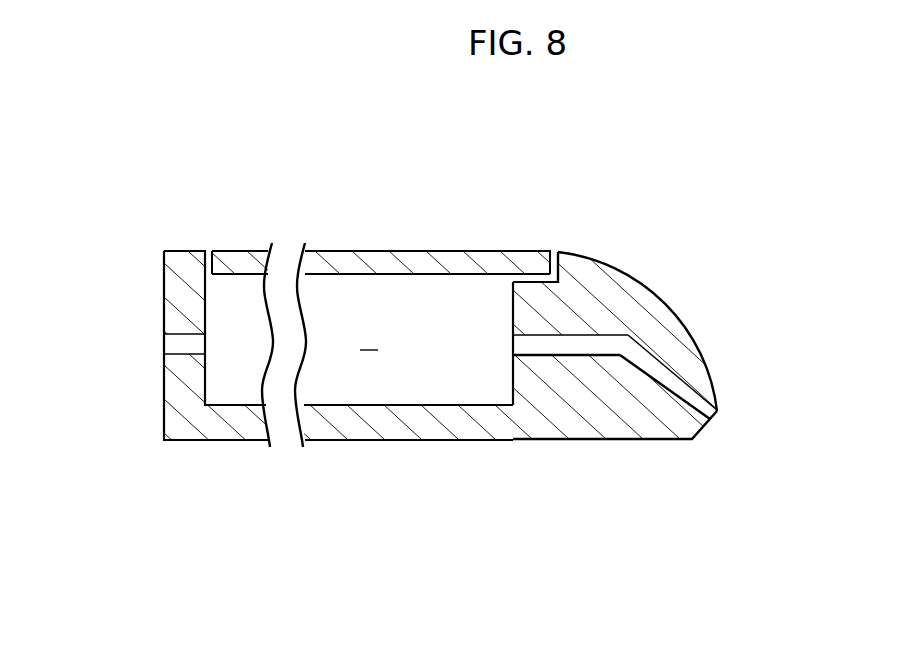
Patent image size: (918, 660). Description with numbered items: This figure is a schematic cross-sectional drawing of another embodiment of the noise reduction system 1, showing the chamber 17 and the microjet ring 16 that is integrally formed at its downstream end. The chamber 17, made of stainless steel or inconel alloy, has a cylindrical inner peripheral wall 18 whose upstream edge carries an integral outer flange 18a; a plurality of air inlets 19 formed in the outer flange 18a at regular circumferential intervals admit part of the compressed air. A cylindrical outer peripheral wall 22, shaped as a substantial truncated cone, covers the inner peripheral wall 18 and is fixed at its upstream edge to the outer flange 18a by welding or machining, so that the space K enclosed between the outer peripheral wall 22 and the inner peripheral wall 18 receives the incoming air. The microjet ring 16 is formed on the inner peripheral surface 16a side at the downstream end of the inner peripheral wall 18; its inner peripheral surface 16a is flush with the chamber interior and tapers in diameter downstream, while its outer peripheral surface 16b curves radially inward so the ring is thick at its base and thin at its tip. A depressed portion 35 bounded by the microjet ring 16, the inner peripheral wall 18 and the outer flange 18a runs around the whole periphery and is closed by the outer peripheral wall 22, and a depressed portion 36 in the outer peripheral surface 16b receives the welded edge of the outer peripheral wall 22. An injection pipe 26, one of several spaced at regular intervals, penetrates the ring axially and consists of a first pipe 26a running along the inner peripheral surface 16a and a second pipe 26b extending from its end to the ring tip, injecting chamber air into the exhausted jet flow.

The noise reduction system 1 is at (393, 268).
The microjet ring 16 is at (644, 384).
The inner peripheral surface 16a is at (660, 442).
The outer peripheral surface 16b is at (683, 317).
The chamber 17 is at (432, 249).
The inner peripheral wall 18 is at (384, 394).
The outer flange 18a is at (164, 362).
The air inlets 19 is at (173, 334).
The outer peripheral wall 22 is at (342, 258).
The injection pipe 26 is at (615, 446).
The first pipe 26a is at (562, 355).
The second pipe 26b is at (667, 397).
The depressed portion 35 is at (497, 405).
The depressed portion 36 is at (530, 275).
The space K is at (427, 339).